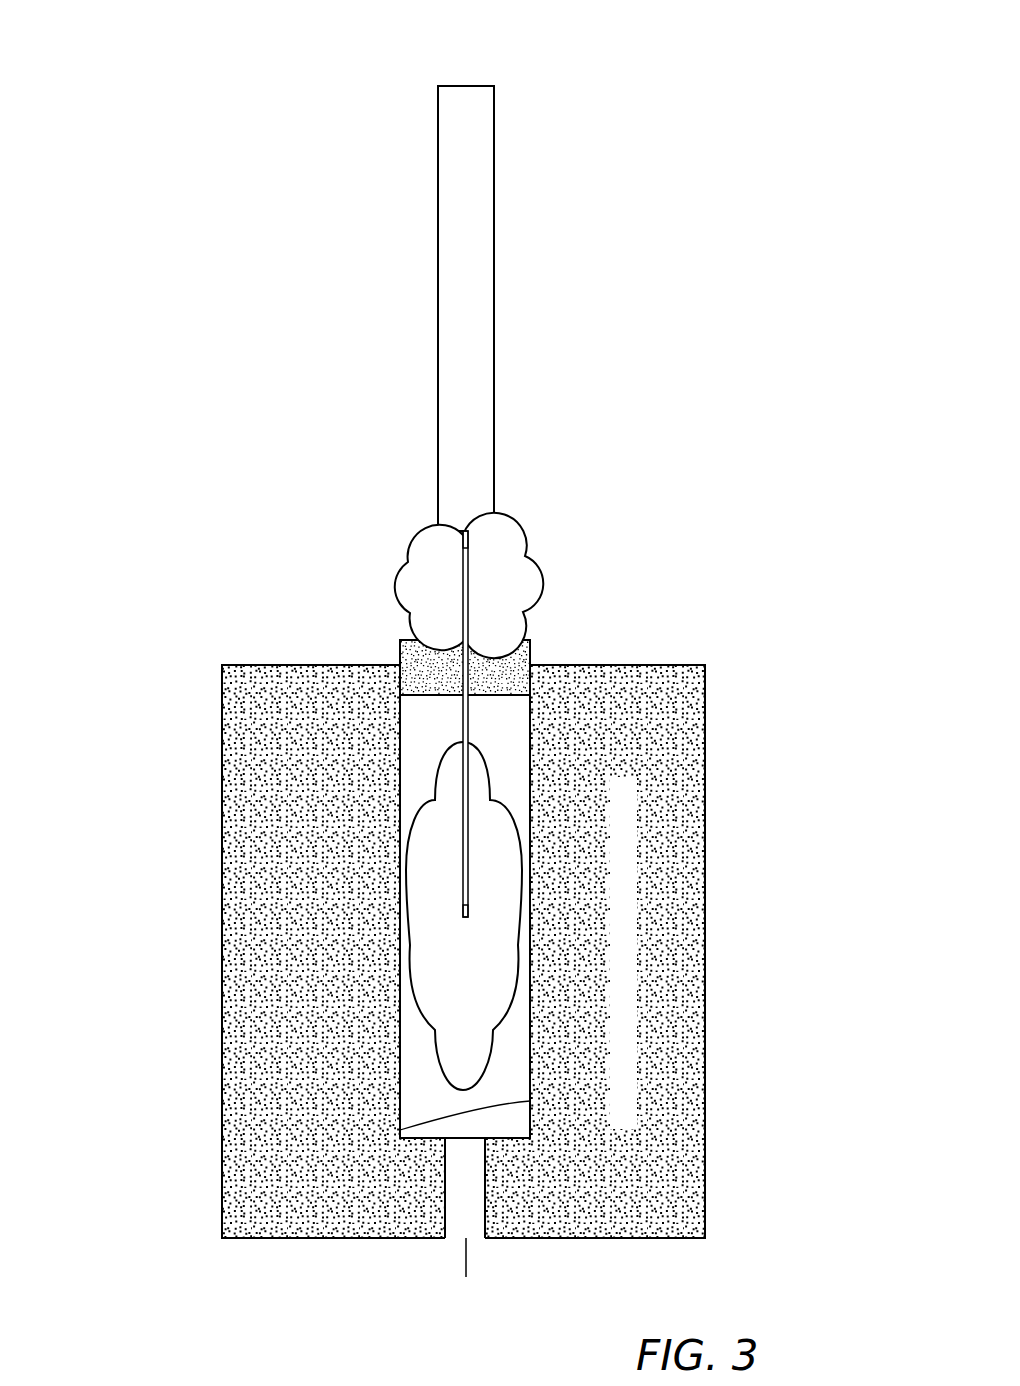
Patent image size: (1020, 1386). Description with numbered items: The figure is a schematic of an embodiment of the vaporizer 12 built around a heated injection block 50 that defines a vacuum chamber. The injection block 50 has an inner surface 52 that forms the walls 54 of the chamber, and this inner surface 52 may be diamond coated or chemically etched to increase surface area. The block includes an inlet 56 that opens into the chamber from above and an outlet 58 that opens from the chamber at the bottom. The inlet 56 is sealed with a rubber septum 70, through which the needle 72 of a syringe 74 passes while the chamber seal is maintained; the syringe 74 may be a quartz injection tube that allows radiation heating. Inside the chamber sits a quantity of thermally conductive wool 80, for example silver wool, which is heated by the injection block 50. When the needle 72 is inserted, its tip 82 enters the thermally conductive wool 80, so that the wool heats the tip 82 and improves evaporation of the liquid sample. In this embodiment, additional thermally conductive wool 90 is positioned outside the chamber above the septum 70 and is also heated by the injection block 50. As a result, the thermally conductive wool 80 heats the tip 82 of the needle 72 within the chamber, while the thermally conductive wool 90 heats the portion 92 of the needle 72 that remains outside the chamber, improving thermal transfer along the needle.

The vaporizer 12 is at (212, 120).
The injection block 50 is at (620, 695).
The inner surface 52 is at (400, 1130).
The walls 54 is at (400, 783).
The inlet 56 is at (512, 660).
The outlet 58 is at (470, 1192).
The septum 70 is at (398, 637).
The needle 72 is at (463, 593).
The syringe 74 is at (472, 143).
The thermally conductive wool 80 is at (410, 917).
The tip 82 is at (468, 893).
The thermally conductive wool 90 is at (510, 538).
The portion 92 is at (463, 555).